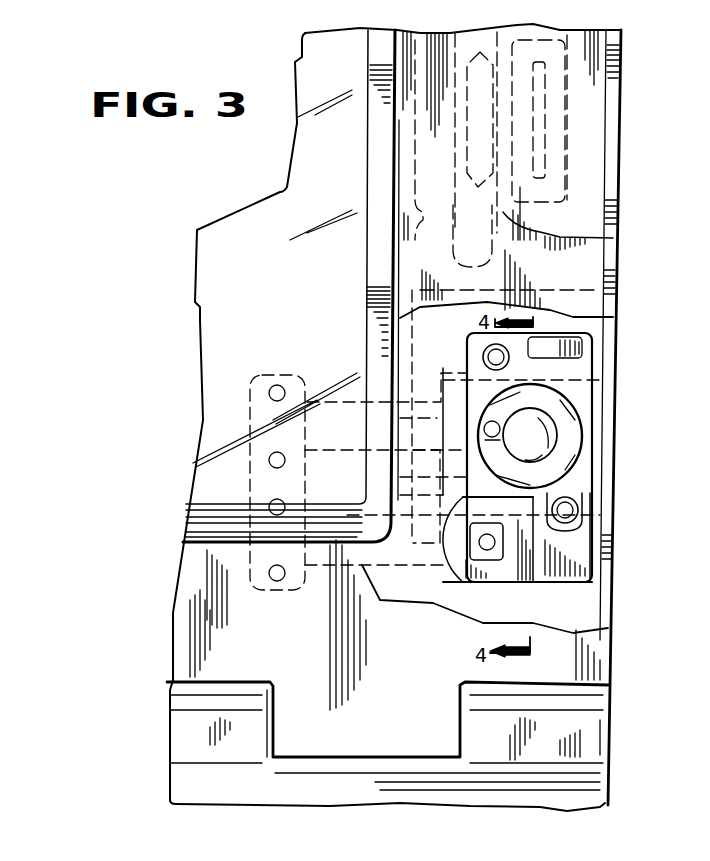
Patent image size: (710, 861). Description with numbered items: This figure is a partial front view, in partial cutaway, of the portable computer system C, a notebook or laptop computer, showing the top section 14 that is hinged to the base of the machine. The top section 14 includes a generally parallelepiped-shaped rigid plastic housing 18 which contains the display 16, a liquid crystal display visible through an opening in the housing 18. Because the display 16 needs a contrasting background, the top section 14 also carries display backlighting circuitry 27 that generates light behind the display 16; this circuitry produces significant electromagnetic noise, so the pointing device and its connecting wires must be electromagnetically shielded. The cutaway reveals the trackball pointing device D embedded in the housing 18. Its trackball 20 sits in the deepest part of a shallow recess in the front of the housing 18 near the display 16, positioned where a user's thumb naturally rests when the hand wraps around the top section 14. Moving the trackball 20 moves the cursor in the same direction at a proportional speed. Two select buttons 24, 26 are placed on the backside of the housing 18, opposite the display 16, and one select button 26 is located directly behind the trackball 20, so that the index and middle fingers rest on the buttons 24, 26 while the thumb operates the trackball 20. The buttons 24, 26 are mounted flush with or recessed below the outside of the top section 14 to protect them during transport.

The top section 14 is at (624, 104).
The display 16 is at (233, 255).
The housing 18 is at (620, 180).
The trackball 20 is at (572, 443).
The select button 24 is at (560, 558).
The select button 26 is at (585, 425).
The display backlighting circuitry 27 is at (618, 240).
The portable computer system C is at (182, 483).
The trackball pointing device D is at (597, 357).